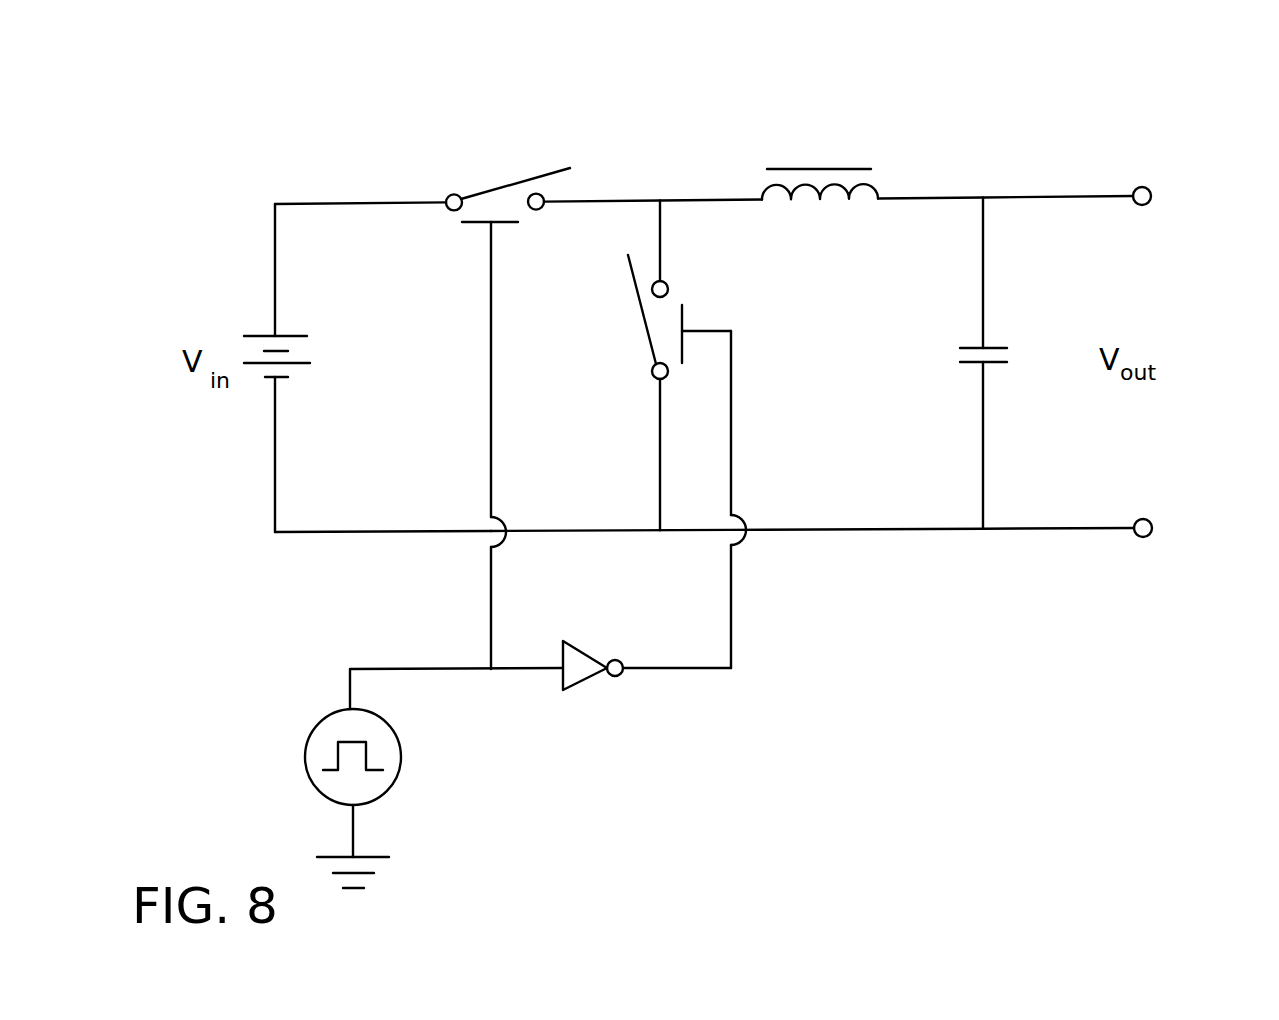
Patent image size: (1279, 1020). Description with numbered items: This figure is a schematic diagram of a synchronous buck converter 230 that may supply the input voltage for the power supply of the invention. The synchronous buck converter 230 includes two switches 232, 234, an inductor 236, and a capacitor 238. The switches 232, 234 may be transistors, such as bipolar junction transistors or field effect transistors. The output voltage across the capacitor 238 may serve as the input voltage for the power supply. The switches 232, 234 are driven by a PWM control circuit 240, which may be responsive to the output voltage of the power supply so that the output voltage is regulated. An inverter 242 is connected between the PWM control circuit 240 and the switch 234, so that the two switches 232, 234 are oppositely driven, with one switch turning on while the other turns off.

The synchronous buck converter 230 is at (1124, 126).
The switch 232 is at (495, 180).
The switch 234 is at (697, 313).
The inductor 236 is at (877, 172).
The capacitor 238 is at (999, 367).
The PWM control circuit 240 is at (400, 762).
The inverter 242 is at (590, 677).